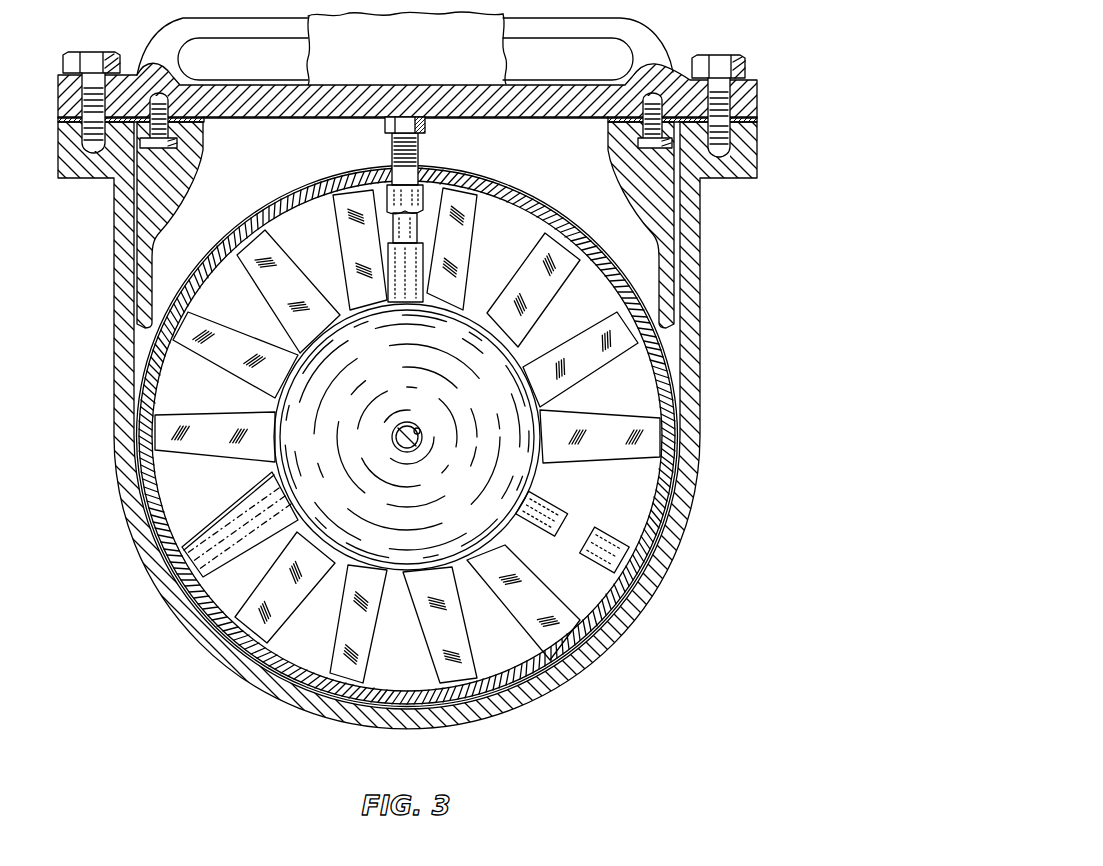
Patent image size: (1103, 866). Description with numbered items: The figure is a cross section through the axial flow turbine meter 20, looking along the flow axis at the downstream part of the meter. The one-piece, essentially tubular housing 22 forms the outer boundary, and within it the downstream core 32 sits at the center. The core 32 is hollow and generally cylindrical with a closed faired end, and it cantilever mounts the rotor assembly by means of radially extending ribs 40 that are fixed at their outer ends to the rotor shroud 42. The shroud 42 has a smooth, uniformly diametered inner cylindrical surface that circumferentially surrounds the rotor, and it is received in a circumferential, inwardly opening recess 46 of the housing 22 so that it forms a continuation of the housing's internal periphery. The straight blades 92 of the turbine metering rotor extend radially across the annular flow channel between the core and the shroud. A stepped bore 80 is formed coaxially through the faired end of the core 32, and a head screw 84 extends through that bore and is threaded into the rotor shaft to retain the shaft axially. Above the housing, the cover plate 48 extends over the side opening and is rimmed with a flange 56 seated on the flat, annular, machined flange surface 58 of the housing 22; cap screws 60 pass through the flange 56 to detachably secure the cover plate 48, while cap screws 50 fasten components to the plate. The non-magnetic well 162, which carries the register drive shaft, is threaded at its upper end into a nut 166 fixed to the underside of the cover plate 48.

The axial flow turbine meter 20 is at (407, 437).
The housing 22 is at (531, 697).
The downstream core 32 is at (423, 504).
The ribs 40 is at (412, 268).
The rotor shroud 42 is at (636, 628).
The recess 46 is at (574, 661).
The cover plate 48 is at (570, 74).
The cap screws 50 is at (158, 144).
The flange 56 is at (62, 96).
The flange surface 58 is at (57, 114).
The cap screws 60 is at (98, 52).
The stepped bore 80 is at (420, 431).
The head screw 84 is at (402, 447).
The blades 92 is at (296, 282).
The well 162 is at (413, 223).
The nut 166 is at (427, 127).